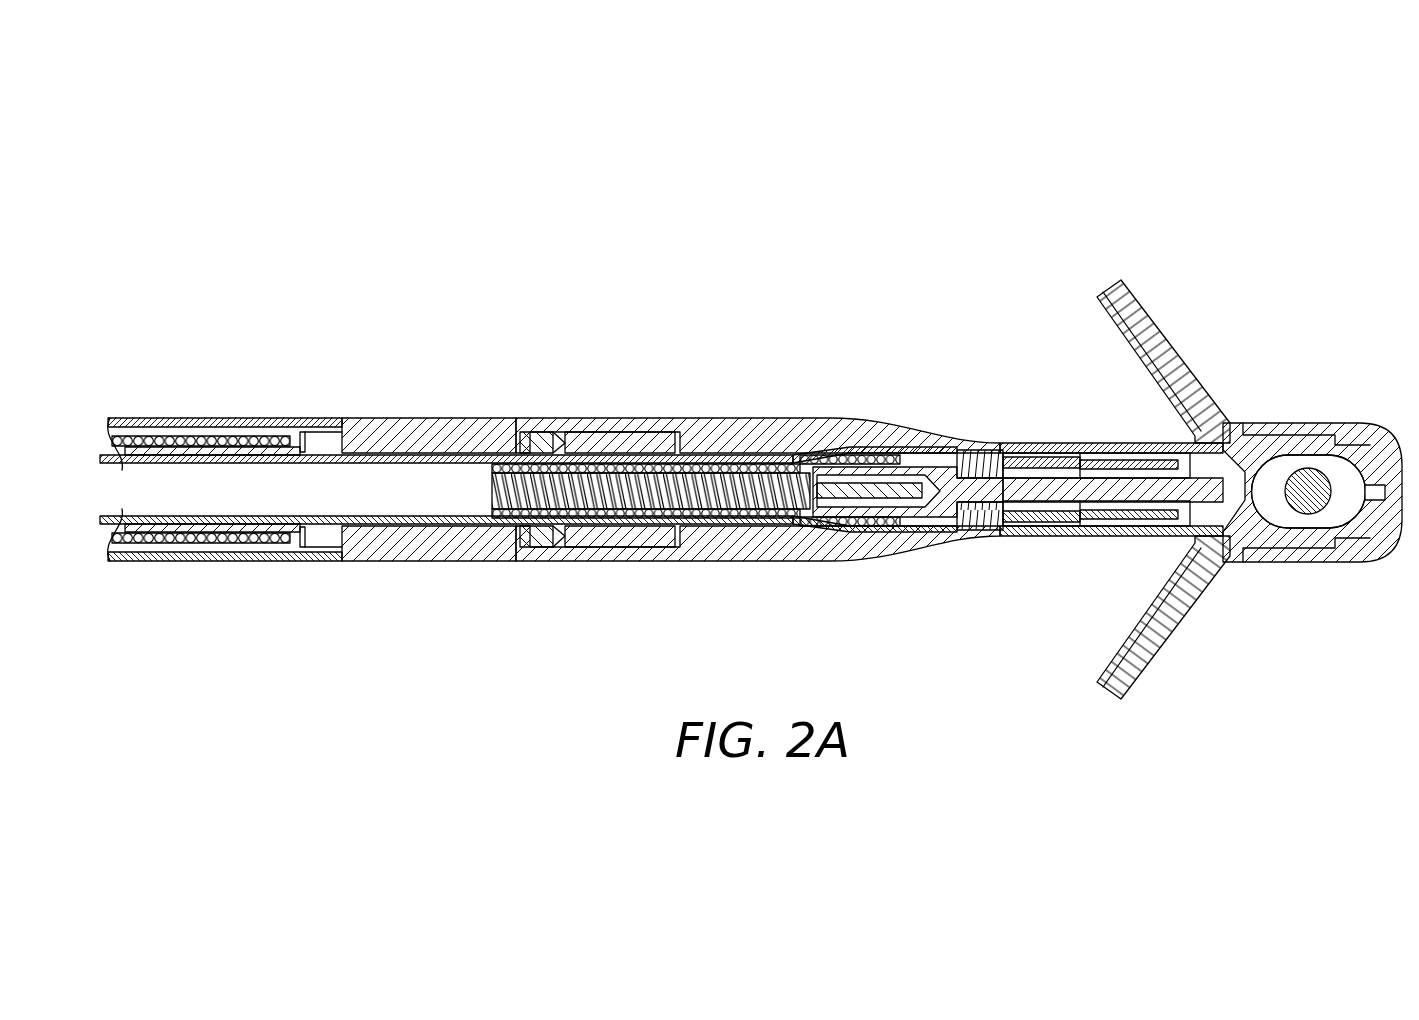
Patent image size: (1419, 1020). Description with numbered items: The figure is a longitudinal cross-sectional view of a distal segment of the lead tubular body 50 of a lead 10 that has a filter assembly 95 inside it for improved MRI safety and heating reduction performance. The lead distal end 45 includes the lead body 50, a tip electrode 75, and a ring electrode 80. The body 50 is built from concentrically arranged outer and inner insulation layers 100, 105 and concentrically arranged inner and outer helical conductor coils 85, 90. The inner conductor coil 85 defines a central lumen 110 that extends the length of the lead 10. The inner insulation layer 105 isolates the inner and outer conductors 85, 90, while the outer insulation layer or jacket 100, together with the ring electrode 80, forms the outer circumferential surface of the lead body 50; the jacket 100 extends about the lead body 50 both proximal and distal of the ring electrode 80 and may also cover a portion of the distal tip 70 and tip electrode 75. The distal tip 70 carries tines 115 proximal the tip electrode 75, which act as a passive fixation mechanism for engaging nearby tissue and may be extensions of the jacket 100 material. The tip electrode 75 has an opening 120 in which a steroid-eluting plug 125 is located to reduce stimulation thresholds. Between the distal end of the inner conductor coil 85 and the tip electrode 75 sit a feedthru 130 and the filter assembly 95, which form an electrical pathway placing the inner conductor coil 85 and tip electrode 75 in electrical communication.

The lead 10 is at (751, 432).
The lead distal end 45 is at (751, 434).
The lead tubular body 50 is at (663, 418).
The distal tip 70 is at (1364, 580).
The tip electrode 75 is at (1400, 562).
The ring electrode 80 is at (432, 418).
The inner conductor coil 85 is at (738, 520).
The outer conductor coil 90 is at (155, 536).
The filter assembly 95 is at (1082, 425).
The outer insulation layer 100 is at (283, 561).
The inner insulation layer 105 is at (285, 455).
The central lumen 110 is at (650, 498).
The tines 115 is at (1132, 302).
The opening 120 is at (1270, 465).
The steroid-eluting plug 125 is at (1313, 468).
The feedthru 130 is at (1005, 422).